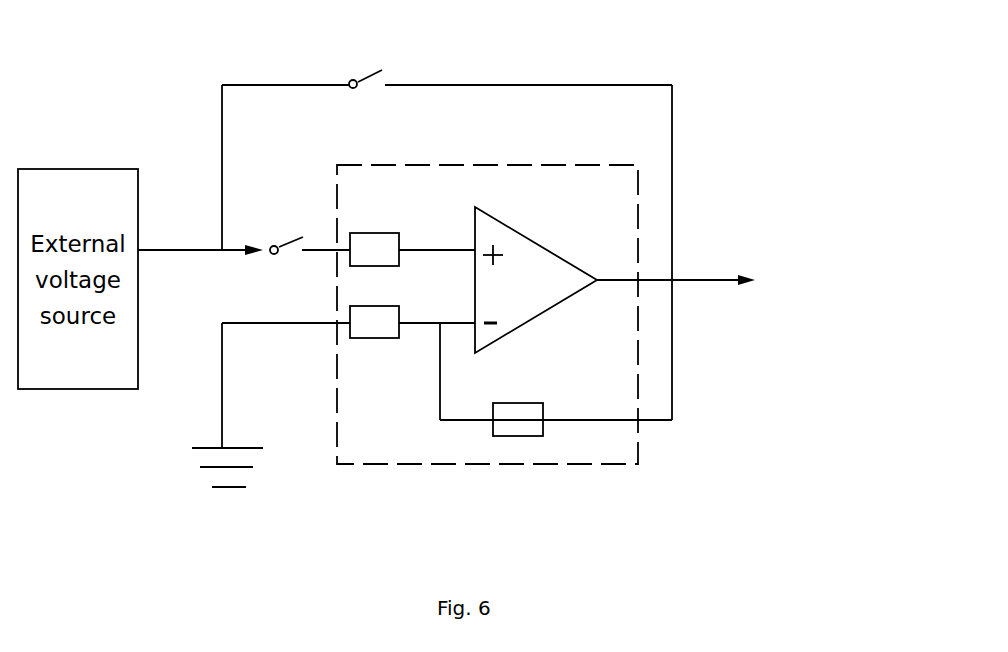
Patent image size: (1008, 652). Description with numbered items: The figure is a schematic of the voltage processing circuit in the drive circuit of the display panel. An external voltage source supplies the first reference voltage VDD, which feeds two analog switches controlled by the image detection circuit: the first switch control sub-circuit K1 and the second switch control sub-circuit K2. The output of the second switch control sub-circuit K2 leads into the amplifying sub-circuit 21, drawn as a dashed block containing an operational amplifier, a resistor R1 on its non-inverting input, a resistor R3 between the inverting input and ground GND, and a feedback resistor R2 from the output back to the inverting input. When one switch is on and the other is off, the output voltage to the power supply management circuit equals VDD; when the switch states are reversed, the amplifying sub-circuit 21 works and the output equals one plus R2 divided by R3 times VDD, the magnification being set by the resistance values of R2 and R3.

The amplifying sub-circuit 21 is at (408, 465).
The first switch control sub-circuit K1 is at (304, 223).
The second switch control sub-circuit K2 is at (447, 54).
The first resistor R1 is at (412, 226).
The resistor R2 is at (491, 379).
The resistor R3 is at (412, 357).
The first reference voltage VDD is at (200, 235).
The ground GND is at (229, 405).